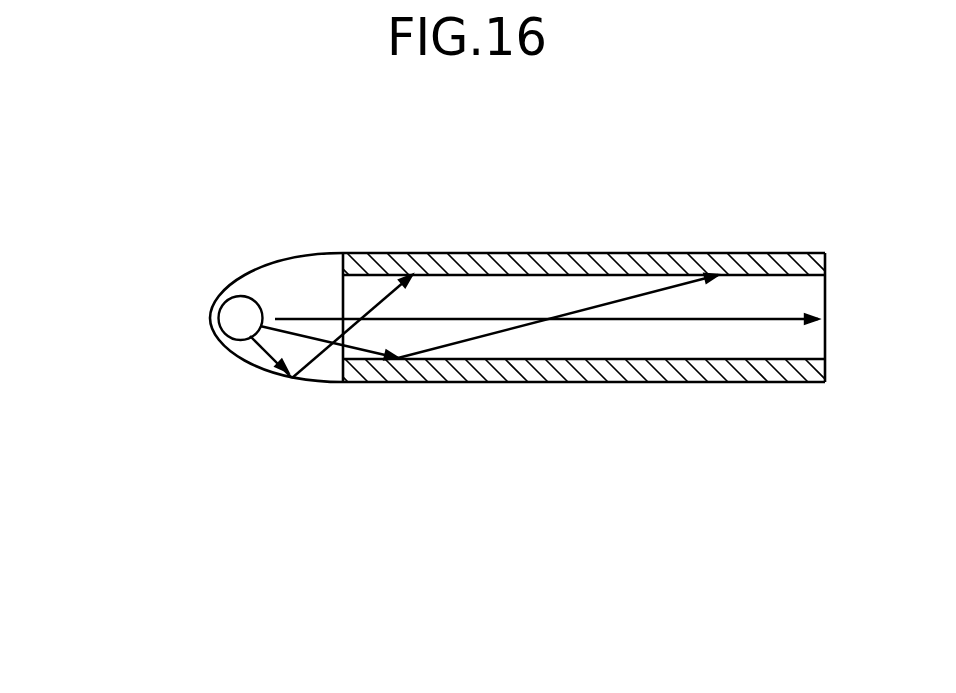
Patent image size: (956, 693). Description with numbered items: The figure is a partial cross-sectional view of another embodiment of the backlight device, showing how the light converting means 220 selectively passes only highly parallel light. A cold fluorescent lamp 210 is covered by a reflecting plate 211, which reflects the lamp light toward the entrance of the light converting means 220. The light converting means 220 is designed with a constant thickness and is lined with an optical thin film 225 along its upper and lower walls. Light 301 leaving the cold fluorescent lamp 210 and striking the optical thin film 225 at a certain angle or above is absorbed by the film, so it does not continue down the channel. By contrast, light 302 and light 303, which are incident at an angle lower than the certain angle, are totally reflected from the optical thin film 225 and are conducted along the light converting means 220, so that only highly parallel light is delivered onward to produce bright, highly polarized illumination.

The cold fluorescent lamp 210 is at (240, 307).
The reflecting plate 211 is at (210, 317).
The light converting means 220 is at (827, 450).
The optical thin film 225 is at (438, 255).
The light 301 is at (348, 349).
The light 302 is at (590, 308).
The light 303 is at (737, 318).